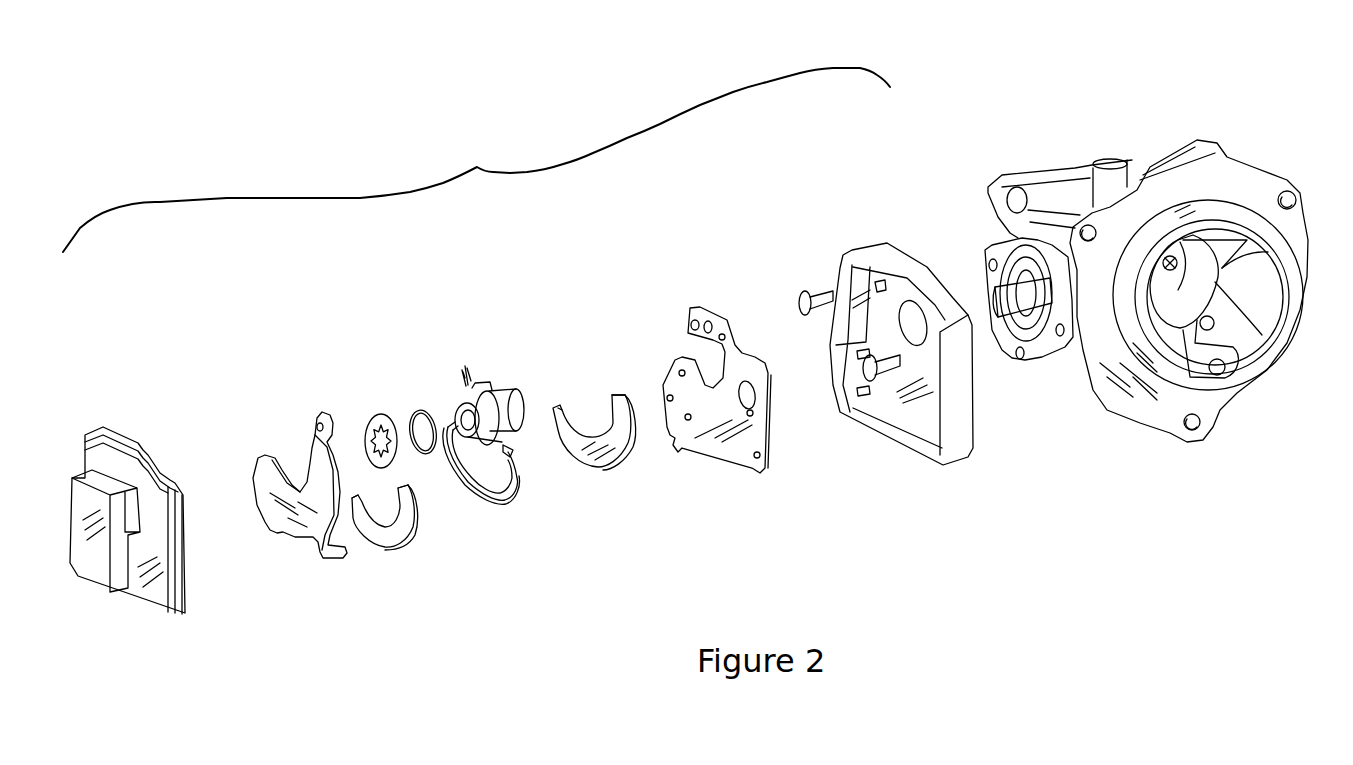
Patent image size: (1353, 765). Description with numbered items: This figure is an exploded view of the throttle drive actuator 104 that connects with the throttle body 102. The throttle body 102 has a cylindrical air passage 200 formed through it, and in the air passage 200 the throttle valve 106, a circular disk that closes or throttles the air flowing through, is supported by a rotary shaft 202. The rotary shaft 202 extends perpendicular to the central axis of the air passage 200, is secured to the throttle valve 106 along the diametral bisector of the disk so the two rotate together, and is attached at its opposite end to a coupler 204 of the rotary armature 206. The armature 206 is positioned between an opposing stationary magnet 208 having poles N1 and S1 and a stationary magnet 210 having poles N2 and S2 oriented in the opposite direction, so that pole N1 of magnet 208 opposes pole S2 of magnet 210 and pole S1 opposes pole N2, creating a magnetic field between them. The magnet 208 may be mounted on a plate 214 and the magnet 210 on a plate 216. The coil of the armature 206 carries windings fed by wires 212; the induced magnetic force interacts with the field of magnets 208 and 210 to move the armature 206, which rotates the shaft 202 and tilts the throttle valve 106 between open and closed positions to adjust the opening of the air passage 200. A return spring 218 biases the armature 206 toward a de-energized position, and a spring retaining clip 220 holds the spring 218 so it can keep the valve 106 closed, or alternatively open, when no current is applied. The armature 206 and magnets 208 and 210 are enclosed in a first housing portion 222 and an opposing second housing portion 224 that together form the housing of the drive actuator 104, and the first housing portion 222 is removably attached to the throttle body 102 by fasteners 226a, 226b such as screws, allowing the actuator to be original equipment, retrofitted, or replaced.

The throttle body 102 is at (1253, 177).
The throttle drive actuator 104 is at (477, 167).
The throttle valve 106 is at (1158, 272).
The air passage 200 is at (1250, 338).
The rotary shaft 202 is at (1012, 362).
The coupler 204 is at (507, 390).
The armature 206 is at (488, 500).
The stationary magnet 208 is at (607, 467).
The stationary magnet 210 is at (393, 535).
The wires 212 is at (470, 345).
The plate 214 is at (750, 465).
The plate 216 is at (263, 455).
The return spring 218 is at (420, 410).
The spring retaining clip 220 is at (378, 414).
The first housing portion 222 is at (848, 248).
The second housing portion 224 is at (100, 425).
The fastener 226a is at (790, 297).
The fastener 226b is at (837, 398).
The south pole S1 is at (560, 402).
The north pole N1 is at (617, 395).
The south pole S2 is at (400, 488).
The north pole N2 is at (353, 518).